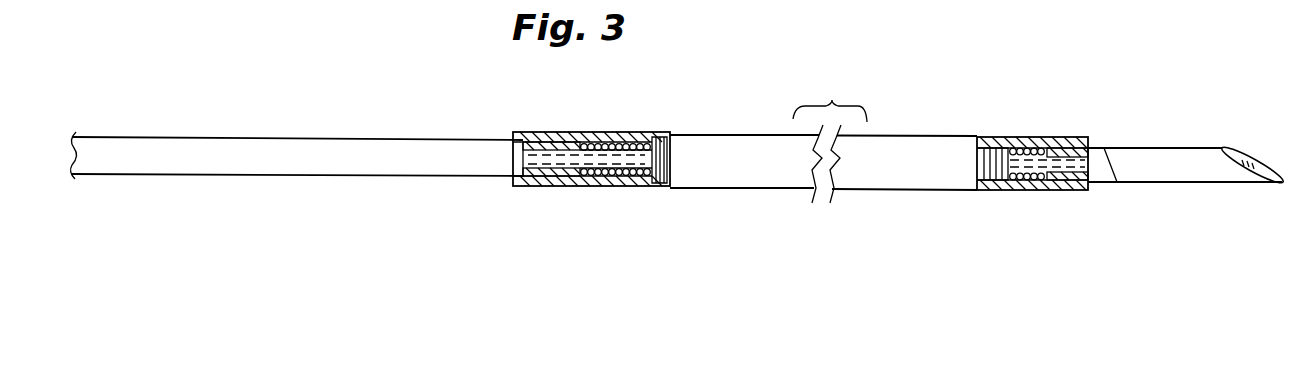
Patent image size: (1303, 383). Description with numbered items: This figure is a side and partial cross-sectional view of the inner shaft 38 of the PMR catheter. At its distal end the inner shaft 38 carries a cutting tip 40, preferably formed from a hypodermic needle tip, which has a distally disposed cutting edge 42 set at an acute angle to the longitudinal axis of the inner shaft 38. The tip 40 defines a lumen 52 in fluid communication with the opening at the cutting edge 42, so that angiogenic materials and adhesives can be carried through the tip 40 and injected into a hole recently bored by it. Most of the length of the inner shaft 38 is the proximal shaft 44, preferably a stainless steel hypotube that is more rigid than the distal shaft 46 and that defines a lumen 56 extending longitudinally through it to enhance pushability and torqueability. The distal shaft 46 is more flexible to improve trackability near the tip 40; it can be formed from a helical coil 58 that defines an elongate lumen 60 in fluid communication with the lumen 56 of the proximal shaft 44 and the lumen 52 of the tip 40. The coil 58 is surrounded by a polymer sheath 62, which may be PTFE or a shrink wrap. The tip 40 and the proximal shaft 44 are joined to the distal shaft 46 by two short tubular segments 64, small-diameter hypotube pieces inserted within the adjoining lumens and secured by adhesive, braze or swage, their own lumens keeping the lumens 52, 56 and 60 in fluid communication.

The inner shaft 38 is at (898, 135).
The cutting tip 40 is at (1238, 177).
The cutting edge 42 is at (1247, 162).
The proximal shaft 44 is at (327, 155).
The distal shaft 46 is at (737, 135).
The lumen 52 is at (1097, 165).
The lumen 56 is at (545, 152).
The helical coil 58 is at (600, 177).
The elongate lumen 60 is at (658, 188).
The polymer sheath 62 is at (547, 186).
The tubular segments 64 is at (568, 156).